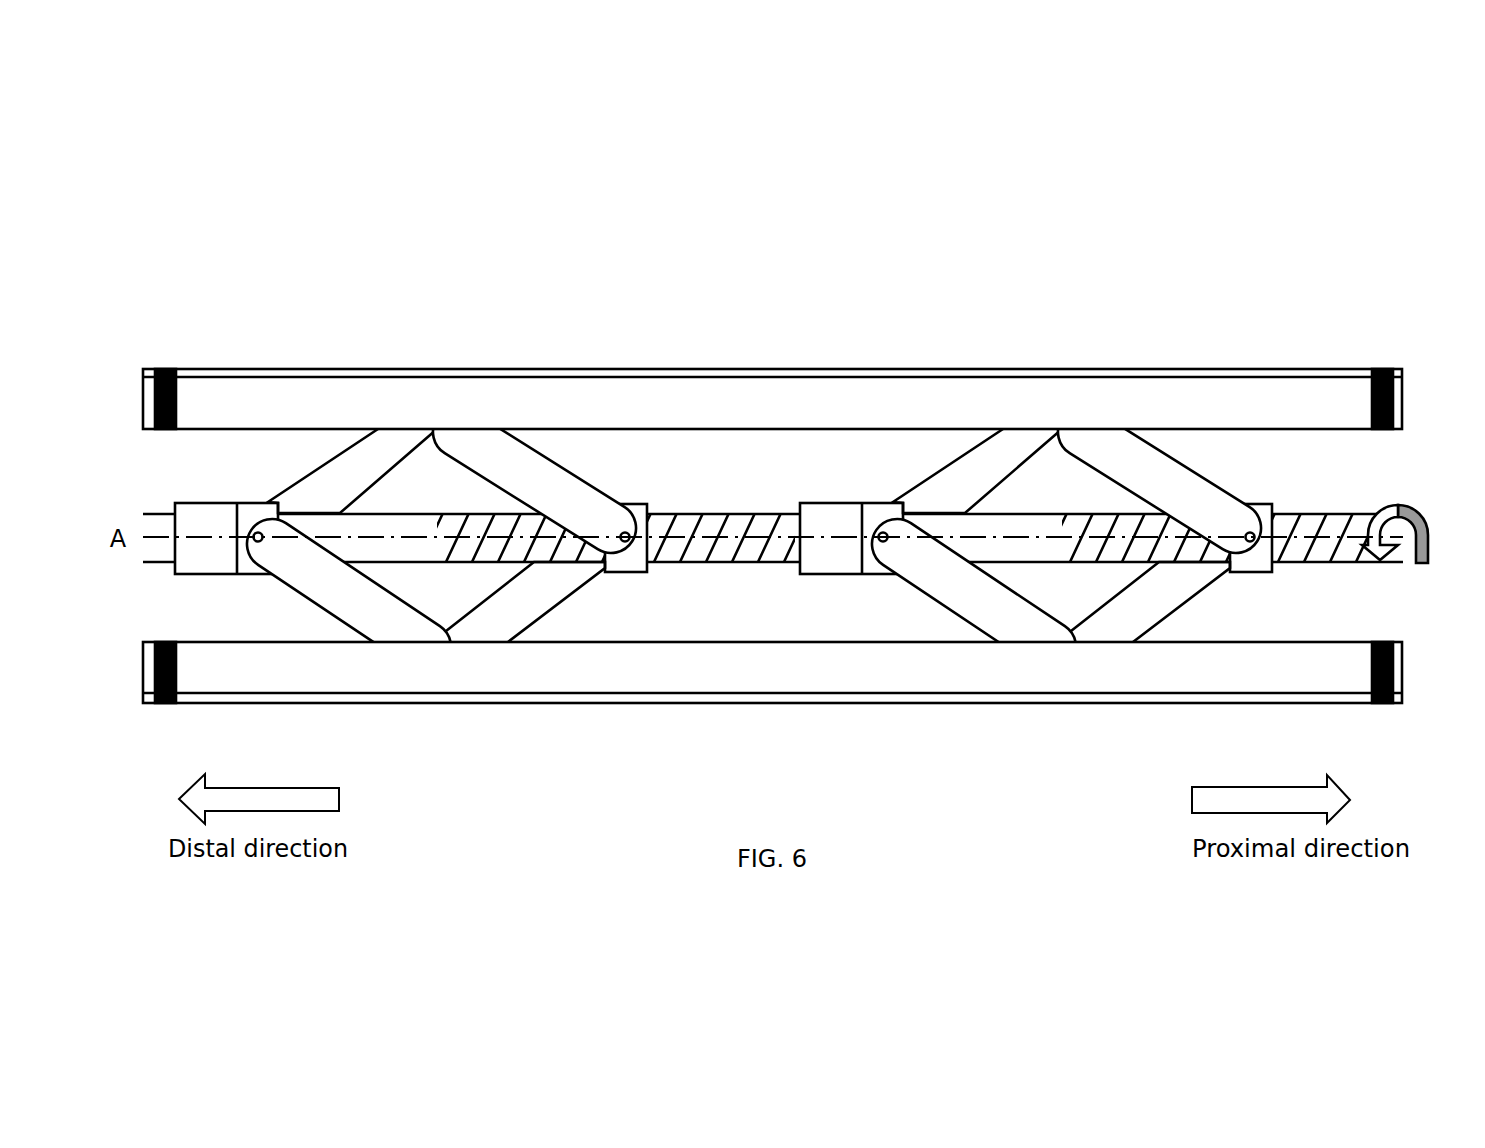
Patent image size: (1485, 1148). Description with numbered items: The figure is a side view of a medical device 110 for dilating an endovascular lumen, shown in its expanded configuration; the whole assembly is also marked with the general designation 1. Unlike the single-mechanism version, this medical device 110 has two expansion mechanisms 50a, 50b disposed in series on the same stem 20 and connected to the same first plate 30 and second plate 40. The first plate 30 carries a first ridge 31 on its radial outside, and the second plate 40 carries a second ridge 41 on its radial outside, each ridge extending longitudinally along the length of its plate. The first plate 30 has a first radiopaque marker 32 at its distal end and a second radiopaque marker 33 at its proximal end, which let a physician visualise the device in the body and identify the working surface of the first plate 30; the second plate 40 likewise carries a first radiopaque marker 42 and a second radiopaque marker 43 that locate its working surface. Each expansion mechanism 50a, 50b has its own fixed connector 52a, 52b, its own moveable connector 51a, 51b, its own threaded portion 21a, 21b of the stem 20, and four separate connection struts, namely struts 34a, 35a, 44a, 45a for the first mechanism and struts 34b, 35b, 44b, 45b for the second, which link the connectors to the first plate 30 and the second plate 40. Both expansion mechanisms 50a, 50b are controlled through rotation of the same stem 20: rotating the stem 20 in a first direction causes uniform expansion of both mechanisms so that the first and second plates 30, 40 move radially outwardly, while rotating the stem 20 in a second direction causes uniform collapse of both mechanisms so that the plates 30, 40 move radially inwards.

The medical manipulator device 1 is at (784, 479).
The medical device 110 is at (787, 466).
The stem 20 is at (787, 530).
The threaded portion 21a is at (665, 563).
The threaded portion 21b is at (1292, 563).
The first plate 30 is at (784, 300).
The first ridge 31 is at (727, 369).
The first radiopaque marker 32 is at (166, 369).
The second radiopaque marker 33 is at (1385, 369).
The second plate 40 is at (783, 732).
The second ridge 41 is at (620, 703).
The first radiopaque marker 42 is at (173, 704).
The second radiopaque marker 43 is at (1383, 704).
The expansion mechanism 50a is at (441, 521).
The expansion mechanism 50b is at (1066, 521).
The moveable connector 51a is at (623, 504).
The moveable connector 51b is at (1243, 412).
The fixed connector 52a is at (219, 503).
The fixed connector 52b is at (852, 409).
The connection strut 34a is at (333, 453).
The connection strut 34b is at (977, 379).
The connection strut 35a is at (543, 450).
The connection strut 35b is at (1141, 407).
The connection strut 44a is at (290, 597).
The connection strut 44b is at (974, 645).
The connection strut 45a is at (540, 617).
The connection strut 45b is at (1143, 679).